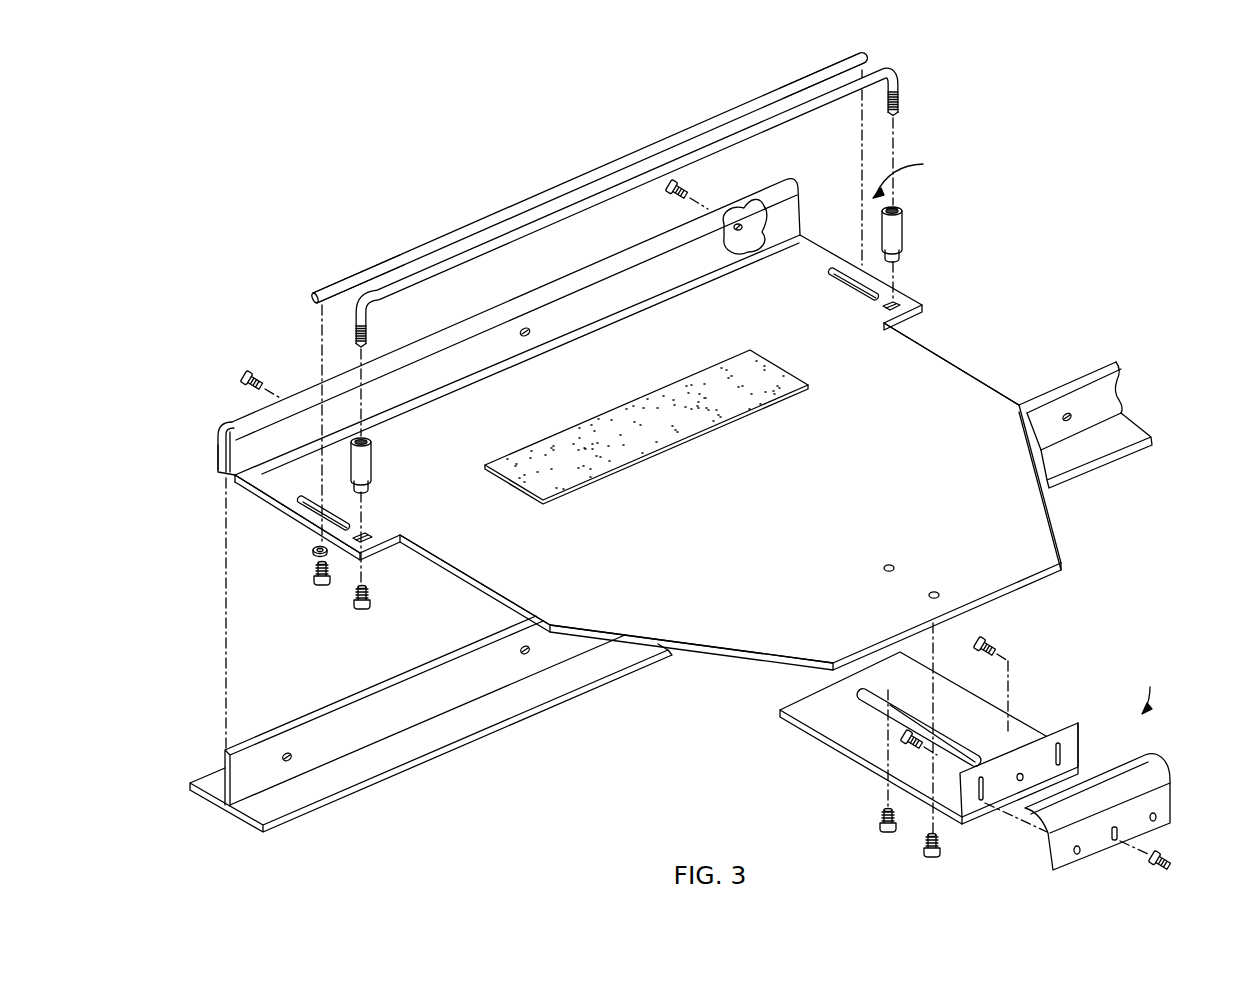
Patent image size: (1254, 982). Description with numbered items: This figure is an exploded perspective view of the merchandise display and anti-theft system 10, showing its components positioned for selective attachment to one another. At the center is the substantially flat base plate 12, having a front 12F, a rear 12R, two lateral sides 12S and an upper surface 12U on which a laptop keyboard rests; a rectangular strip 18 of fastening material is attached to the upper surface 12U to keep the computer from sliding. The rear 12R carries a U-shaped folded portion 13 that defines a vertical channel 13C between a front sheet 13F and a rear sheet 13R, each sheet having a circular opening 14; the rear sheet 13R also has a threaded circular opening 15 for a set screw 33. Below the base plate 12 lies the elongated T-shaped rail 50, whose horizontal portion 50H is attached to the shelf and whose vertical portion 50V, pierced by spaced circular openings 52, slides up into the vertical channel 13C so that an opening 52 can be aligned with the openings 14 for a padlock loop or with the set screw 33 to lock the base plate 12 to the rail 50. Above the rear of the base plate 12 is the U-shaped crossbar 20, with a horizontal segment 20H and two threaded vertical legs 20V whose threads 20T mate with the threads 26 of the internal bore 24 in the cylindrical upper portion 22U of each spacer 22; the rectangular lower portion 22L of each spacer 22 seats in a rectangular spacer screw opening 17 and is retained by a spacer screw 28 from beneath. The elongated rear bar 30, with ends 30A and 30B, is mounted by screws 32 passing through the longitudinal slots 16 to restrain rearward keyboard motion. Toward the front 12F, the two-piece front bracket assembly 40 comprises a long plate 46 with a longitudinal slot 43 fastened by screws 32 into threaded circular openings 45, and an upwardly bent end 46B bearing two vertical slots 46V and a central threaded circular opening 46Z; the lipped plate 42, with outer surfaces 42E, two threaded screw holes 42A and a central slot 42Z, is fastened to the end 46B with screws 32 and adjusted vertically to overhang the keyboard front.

The merchandise display and anti-theft system 10 is at (687, 463).
The base plate 12 is at (693, 466).
The upper surface 12U is at (778, 502).
The front 12F is at (740, 642).
The lateral sides 12S is at (454, 571).
The rear 12R is at (283, 488).
The folded portion 13 is at (488, 329).
The front sheet 13F is at (257, 442).
The rear sheet 13R is at (217, 440).
The vertical channel 13C is at (219, 455).
The circular opening 14 is at (523, 327).
The threaded circular opening 15 is at (742, 229).
The longitudinal slots 16 is at (313, 515).
The spacer screw openings 17 is at (373, 541).
The rectangular strip of fastening material 18 is at (778, 360).
The crossbar 20 is at (612, 315).
The horizontal segment 20H is at (476, 247).
The vertical legs 20V is at (378, 308).
The threads 20T is at (355, 332).
The spacers 22 is at (661, 356).
The upper portion 22U is at (373, 450).
The lower portion 22L is at (372, 487).
The internal bore 24 is at (917, 173).
The threads 26 is at (898, 209).
The spacer screws 28 is at (370, 601).
The rear bar 30 is at (559, 168).
The end 30A is at (322, 289).
The end 30B is at (848, 53).
The screws 32 is at (320, 584).
The set screws 33 is at (669, 186).
The front bracket assembly 40 is at (1008, 758).
The lipped plate 42 is at (1131, 810).
The threaded screw holes 42A is at (1156, 814).
The slot 42Z is at (1120, 831).
The outer surfaces 42E is at (1092, 836).
The longitudinal slot 43 is at (860, 694).
The threaded circular openings 45 is at (896, 566).
The long plate 46 is at (951, 738).
The vertical slots 46V is at (980, 789).
The end 46B is at (1082, 738).
The threaded circular opening 46Z is at (1021, 773).
The rail 50 is at (428, 734).
The vertical portion 50V is at (425, 734).
The horizontal portion 50H is at (398, 753).
The circular openings 52 is at (292, 760).